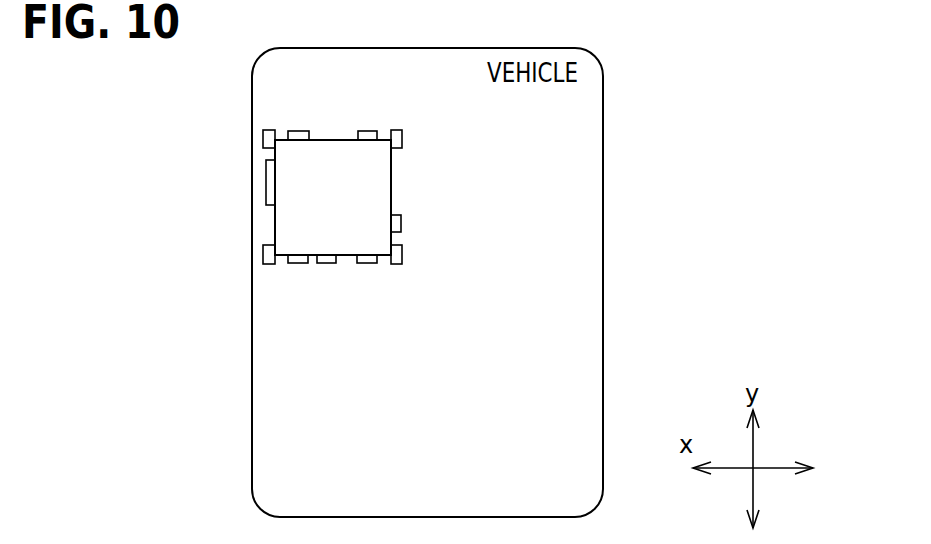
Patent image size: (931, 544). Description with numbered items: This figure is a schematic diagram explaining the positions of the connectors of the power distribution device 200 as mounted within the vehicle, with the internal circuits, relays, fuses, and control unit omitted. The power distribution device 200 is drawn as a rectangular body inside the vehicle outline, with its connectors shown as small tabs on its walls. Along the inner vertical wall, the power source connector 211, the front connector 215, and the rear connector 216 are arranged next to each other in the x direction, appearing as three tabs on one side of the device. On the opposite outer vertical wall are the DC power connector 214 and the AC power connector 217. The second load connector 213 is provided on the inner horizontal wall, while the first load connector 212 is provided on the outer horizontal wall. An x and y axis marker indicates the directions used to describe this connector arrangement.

The power distribution device 200 is at (354, 212).
The power source connector 211 is at (366, 263).
The first load connector 212 is at (266, 172).
The second load connector 213 is at (401, 223).
The DC power connector 214 is at (366, 131).
The front connector 215 is at (326, 263).
The rear connector 216 is at (298, 263).
The AC power connector 217 is at (299, 131).